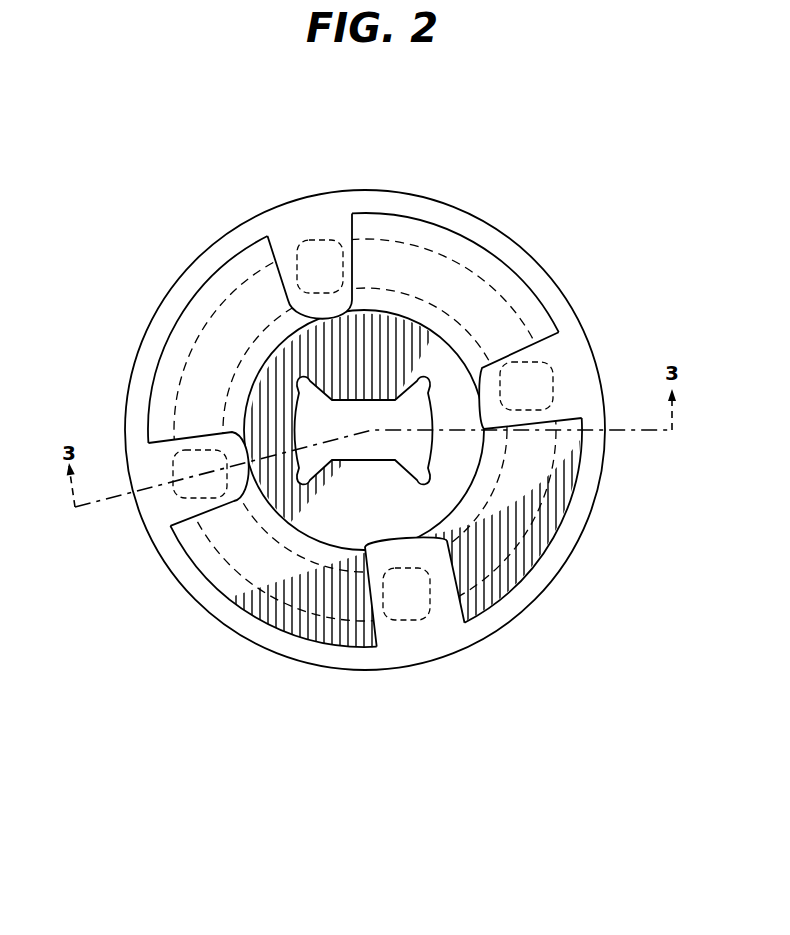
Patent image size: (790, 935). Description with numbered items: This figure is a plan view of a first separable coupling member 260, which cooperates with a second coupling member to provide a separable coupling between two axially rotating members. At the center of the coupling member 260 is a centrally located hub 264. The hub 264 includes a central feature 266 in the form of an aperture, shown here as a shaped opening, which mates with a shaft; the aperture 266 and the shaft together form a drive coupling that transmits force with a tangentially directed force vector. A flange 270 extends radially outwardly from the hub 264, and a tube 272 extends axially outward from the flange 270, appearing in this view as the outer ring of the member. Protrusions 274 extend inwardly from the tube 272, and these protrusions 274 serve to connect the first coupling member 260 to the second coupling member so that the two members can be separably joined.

The first separable coupling member 260 is at (449, 151).
The hub 264 is at (396, 399).
The central feature 266 is at (413, 404).
The flange 270 is at (253, 302).
The tube 272 is at (157, 307).
The protrusions 274 is at (531, 468).